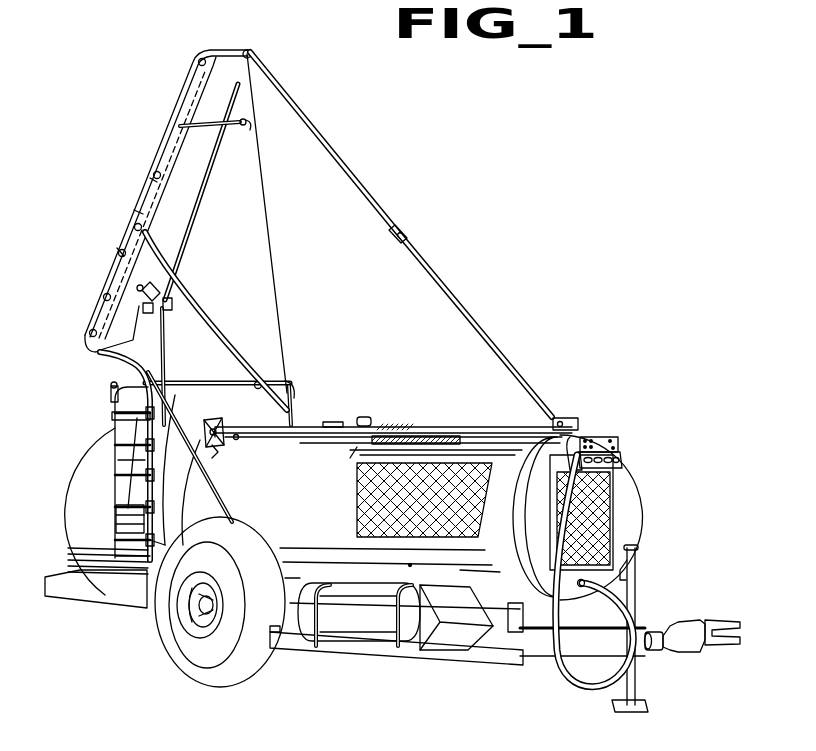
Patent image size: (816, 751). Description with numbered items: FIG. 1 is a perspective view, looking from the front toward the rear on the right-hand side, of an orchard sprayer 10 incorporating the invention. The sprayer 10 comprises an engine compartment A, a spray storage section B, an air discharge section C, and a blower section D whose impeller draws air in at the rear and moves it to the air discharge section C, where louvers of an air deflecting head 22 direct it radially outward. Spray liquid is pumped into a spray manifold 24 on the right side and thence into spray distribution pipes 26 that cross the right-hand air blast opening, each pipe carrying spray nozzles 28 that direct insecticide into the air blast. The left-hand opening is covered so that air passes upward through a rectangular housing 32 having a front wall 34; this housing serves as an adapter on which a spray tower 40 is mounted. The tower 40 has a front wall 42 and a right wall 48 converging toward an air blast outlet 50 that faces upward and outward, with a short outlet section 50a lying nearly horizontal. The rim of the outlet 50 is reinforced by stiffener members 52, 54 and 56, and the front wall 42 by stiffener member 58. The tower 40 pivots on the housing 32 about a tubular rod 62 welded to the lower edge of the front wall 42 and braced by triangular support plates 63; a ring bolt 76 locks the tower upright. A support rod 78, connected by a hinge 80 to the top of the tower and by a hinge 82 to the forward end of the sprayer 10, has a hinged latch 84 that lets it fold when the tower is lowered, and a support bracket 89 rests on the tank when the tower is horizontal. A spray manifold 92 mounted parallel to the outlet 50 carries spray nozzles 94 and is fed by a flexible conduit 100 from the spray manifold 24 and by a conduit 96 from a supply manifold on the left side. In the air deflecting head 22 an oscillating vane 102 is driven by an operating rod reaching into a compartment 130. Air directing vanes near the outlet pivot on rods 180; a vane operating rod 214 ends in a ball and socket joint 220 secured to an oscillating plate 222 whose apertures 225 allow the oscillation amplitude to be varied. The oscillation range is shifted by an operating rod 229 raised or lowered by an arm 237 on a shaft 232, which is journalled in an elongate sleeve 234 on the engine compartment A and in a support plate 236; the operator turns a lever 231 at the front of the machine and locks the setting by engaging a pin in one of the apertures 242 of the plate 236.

The sprayer 10 is at (612, 412).
The air deflecting head 22 is at (133, 587).
The spray manifold 24 is at (150, 517).
The spray distribution pipes 26 is at (122, 463).
The spray nozzles 28 is at (113, 417).
The rectangular housing 32 is at (276, 384).
The front wall 34 is at (292, 404).
The spray tower 40 is at (423, 236).
The front wall 42 is at (259, 228).
The right wall 48 is at (136, 344).
The air blast outlet 50 is at (157, 150).
The short outlet section 50a is at (214, 54).
The stiffener member 52 is at (153, 181).
The stiffener member 54 is at (246, 50).
The stiffener member 56 is at (133, 212).
The stiffener member 58 is at (194, 210).
The tubular rod 62 is at (257, 382).
The triangular support plates 63 is at (217, 385).
The ring bolt 76 is at (112, 391).
The support rod 78 is at (447, 289).
The hinge 80 is at (263, 62).
The hinge 82 is at (557, 417).
The hinged latch 84 is at (401, 233).
The support bracket 89 is at (247, 124).
The spray manifold 92 is at (118, 252).
The spray nozzles 94 is at (189, 100).
The conduit 96 is at (158, 250).
The flexible conduit 100 is at (128, 368).
The vane 102 is at (95, 547).
The compartment 130 is at (192, 494).
The rod 180 is at (138, 308).
The vane operating rod 214 is at (166, 326).
The ball and socket joint 220 is at (168, 302).
The oscillating plate 222 is at (140, 288).
The apertures 225 is at (158, 292).
The operating rod 229 is at (216, 446).
The lever 231 is at (553, 497).
The shaft 232 is at (294, 440).
The elongate sleeve 234 is at (457, 434).
The support plate 236 is at (198, 430).
The arm 237 is at (236, 437).
The apertures 242 is at (213, 424).
The engine compartment A is at (640, 490).
The spray storage section B is at (287, 527).
The air discharge section C is at (108, 478).
The blower section D is at (62, 492).